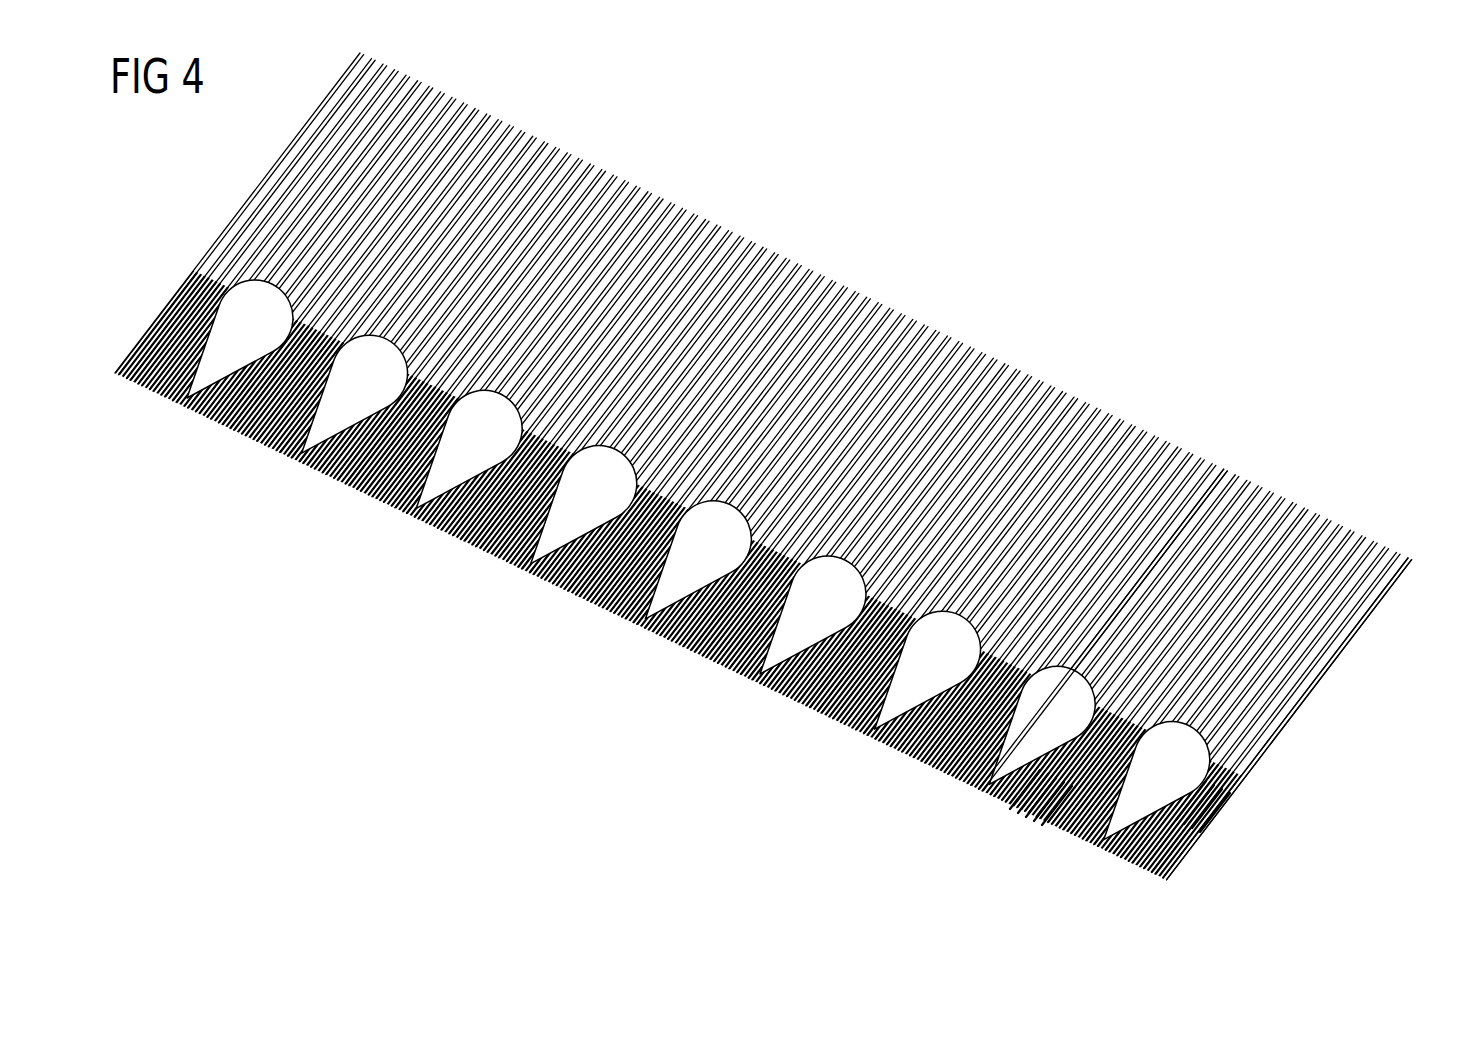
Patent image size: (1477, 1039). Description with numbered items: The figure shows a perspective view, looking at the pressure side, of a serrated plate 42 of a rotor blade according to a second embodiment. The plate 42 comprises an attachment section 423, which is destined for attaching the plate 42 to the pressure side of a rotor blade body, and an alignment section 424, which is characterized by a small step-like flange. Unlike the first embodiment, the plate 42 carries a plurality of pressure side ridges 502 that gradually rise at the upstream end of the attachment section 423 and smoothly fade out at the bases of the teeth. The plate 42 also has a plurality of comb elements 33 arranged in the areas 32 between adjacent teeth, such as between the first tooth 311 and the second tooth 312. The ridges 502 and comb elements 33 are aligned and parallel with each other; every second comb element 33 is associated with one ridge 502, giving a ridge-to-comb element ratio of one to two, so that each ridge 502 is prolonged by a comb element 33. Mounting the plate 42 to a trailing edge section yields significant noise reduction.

The serrated plate 42 is at (788, 470).
The pressure side ridges 502 is at (1197, 512).
The attachment section 423 is at (1377, 618).
The alignment section 424 is at (1306, 713).
The second tooth 312 is at (1015, 735).
The areas between adjacent teeth 32 is at (1066, 787).
The first tooth 311 is at (1128, 803).
The comb elements 33 is at (1214, 792).